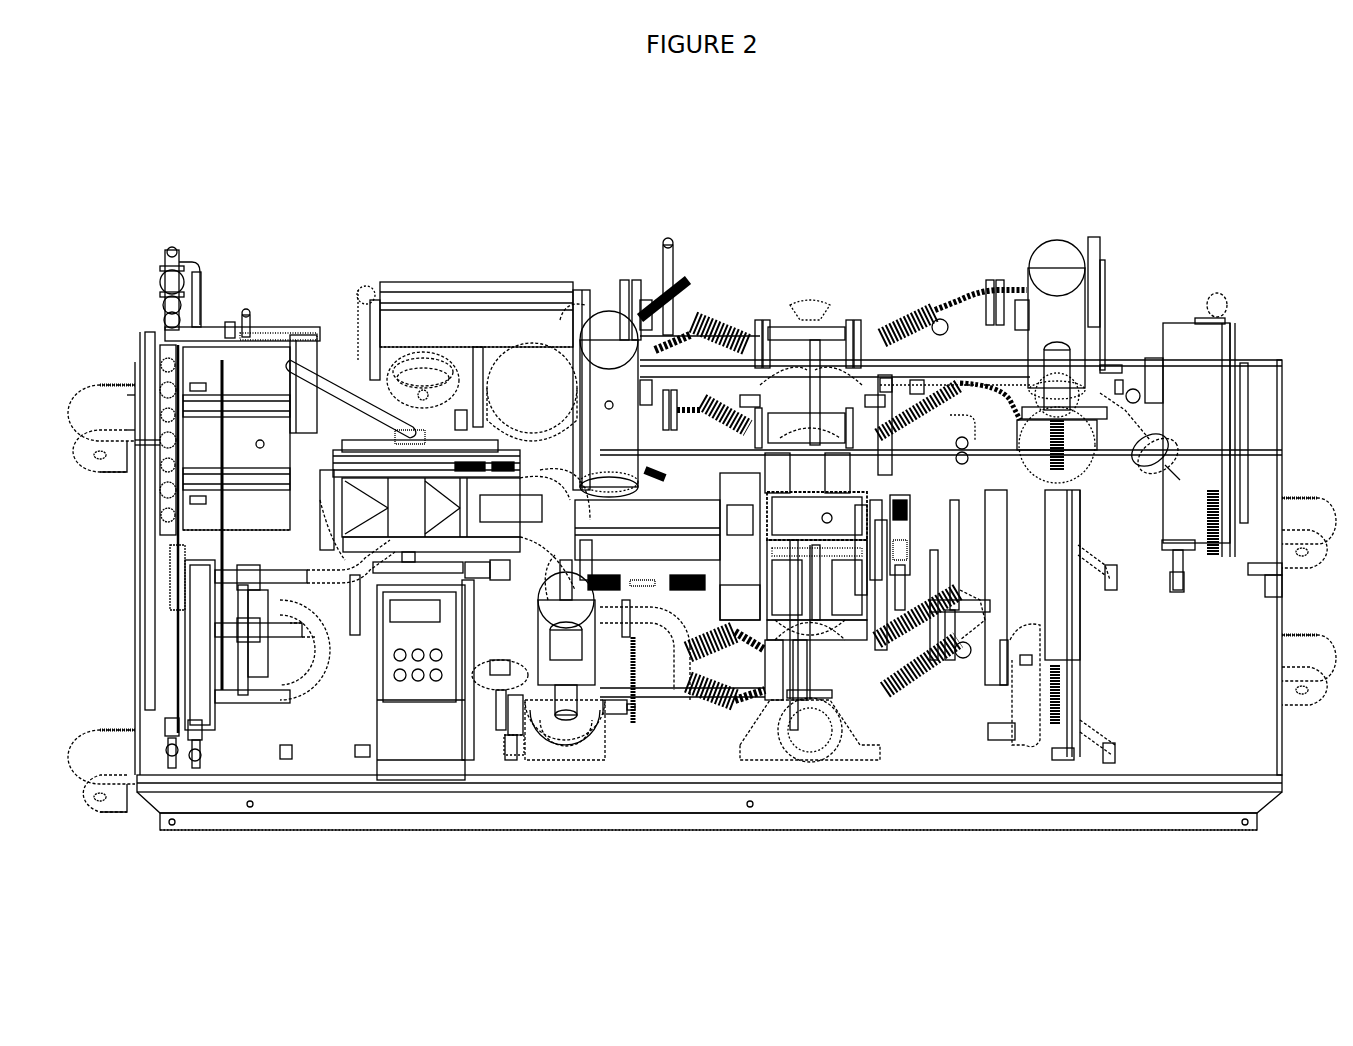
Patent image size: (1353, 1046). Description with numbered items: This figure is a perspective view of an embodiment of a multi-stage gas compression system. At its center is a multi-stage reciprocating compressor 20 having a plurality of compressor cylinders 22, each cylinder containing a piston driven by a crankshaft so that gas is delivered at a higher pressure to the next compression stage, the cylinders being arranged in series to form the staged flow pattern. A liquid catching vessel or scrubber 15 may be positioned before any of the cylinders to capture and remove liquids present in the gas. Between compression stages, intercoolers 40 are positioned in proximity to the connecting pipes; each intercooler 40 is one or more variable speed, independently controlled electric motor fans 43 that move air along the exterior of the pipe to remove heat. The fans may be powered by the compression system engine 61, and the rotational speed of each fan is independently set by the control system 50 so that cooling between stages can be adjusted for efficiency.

The scrubber 15 is at (605, 340).
The multi-stage reciprocating compressor 20 is at (832, 530).
The compressor cylinder 22 is at (828, 335).
The intercooler 40 is at (478, 303).
The electric motor fan 43 is at (1152, 368).
The control system 50 is at (438, 632).
The compression system engine 61 is at (370, 488).